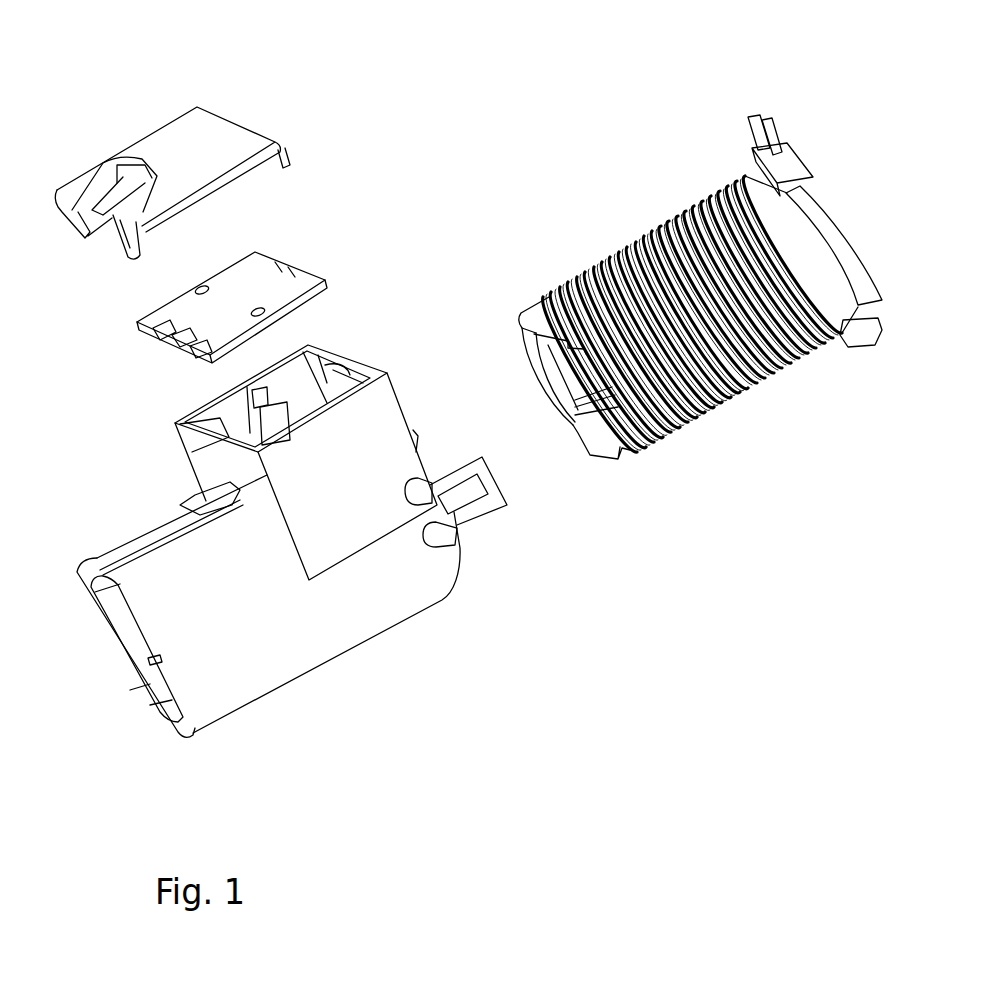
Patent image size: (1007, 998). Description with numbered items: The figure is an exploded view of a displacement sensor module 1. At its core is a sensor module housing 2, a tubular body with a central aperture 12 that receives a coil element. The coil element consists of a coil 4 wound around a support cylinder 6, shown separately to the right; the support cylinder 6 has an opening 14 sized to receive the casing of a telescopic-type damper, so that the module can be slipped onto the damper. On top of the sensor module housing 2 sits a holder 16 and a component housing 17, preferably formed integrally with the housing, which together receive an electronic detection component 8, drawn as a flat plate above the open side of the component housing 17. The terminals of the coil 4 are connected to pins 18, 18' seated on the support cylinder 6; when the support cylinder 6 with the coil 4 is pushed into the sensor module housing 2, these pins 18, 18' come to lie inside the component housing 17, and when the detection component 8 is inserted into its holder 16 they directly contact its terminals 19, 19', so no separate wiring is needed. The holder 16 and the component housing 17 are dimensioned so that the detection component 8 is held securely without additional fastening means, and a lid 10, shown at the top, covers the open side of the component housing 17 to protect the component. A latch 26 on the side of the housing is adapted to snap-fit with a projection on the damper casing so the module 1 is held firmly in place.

The displacement sensor module 1 is at (660, 656).
The sensor module housing 2 is at (292, 655).
The coil 4 is at (712, 418).
The support cylinder 6 is at (830, 205).
The electronic detection component 8 is at (170, 313).
The lid 10 is at (210, 130).
The central aperture 12 is at (124, 656).
The opening 14 is at (547, 400).
The holder 16 is at (260, 412).
The component housing 17 is at (330, 352).
The pin 18 is at (752, 89).
The pin 18' is at (709, 103).
The terminal 19 is at (338, 237).
The terminal 19' is at (309, 219).
The latch 26 is at (492, 505).